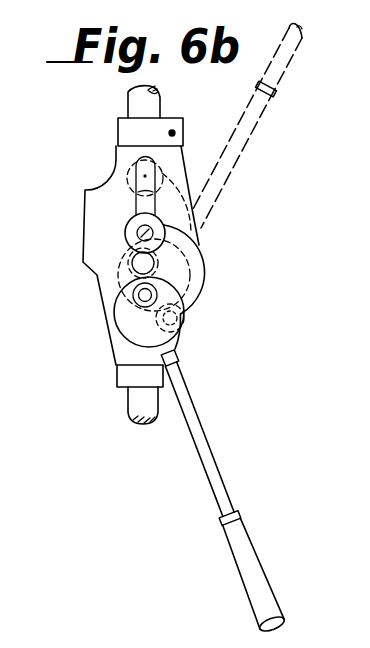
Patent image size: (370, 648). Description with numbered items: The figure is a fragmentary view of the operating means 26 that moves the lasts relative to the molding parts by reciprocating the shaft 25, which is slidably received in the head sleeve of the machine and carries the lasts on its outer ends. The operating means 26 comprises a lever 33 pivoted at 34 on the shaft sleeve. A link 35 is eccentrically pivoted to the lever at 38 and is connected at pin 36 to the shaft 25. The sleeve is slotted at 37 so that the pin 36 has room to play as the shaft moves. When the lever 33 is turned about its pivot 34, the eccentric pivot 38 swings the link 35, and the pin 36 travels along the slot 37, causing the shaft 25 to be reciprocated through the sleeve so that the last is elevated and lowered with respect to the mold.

The shaft 25 is at (126, 412).
The operating means 26 is at (209, 247).
The lever 33 is at (187, 400).
The pivot 34 is at (118, 306).
The link 35 is at (200, 278).
The pin 36 is at (127, 237).
The slot 37 is at (93, 222).
The eccentric pivot 38 is at (187, 331).